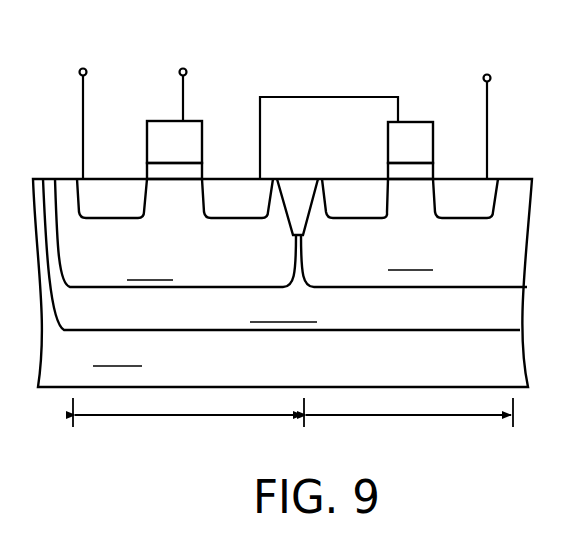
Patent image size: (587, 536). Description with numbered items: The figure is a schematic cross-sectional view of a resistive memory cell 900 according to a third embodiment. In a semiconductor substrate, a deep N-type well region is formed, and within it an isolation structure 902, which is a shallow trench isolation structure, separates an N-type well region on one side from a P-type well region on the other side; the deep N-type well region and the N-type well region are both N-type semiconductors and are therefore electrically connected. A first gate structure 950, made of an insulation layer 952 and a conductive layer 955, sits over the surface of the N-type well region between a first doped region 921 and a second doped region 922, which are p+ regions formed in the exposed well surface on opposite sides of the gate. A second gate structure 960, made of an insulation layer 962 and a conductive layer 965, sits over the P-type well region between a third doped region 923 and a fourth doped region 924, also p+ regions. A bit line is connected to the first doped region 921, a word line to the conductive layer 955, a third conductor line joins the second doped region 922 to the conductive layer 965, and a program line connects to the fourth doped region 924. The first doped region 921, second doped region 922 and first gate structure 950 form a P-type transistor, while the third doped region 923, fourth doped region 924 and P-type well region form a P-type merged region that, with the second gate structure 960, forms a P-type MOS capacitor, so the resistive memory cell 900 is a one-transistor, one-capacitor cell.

The resistive memory cell 900 is at (300, 64).
The isolation structure 902 is at (294, 237).
The first doped region 921 is at (111, 218).
The second doped region 922 is at (230, 218).
The third doped region 923 is at (353, 218).
The fourth doped region 924 is at (481, 218).
The first gate structure 950 is at (143, 121).
The insulation layer 952 is at (188, 170).
The conductive layer 955 is at (168, 125).
The second gate structure 960 is at (386, 122).
The insulation layer 962 is at (451, 167).
The conductive layer 965 is at (415, 122).